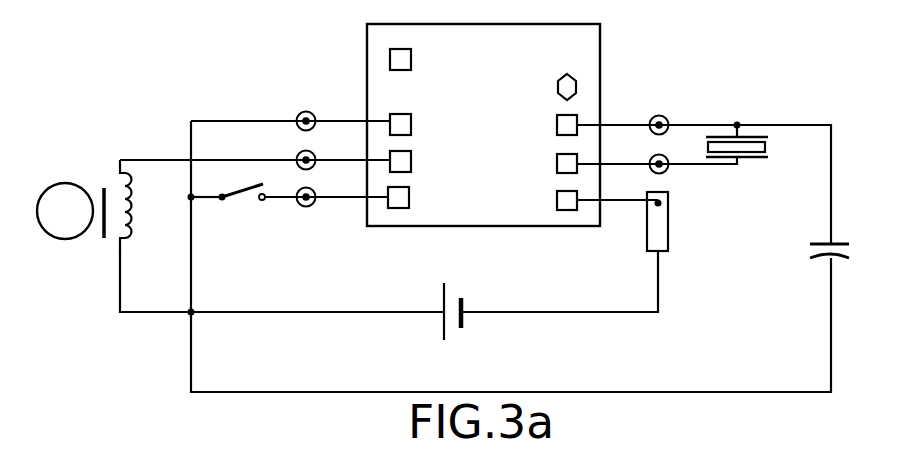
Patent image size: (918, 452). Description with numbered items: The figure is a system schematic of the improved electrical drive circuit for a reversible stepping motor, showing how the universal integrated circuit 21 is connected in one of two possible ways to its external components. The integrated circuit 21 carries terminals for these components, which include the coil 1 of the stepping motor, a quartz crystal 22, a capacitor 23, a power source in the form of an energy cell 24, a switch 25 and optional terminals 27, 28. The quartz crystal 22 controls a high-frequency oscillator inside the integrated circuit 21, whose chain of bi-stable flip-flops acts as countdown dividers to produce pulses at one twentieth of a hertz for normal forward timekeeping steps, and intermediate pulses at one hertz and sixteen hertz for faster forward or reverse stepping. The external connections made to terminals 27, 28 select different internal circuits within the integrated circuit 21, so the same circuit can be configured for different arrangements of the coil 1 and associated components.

The coil 1 is at (131, 226).
The integrated circuit 21 is at (503, 143).
The quartz crystal 22 is at (768, 150).
The capacitor 23 is at (850, 255).
The energy cell 24 is at (452, 330).
The switch 25 is at (245, 200).
The terminal 27 is at (390, 60).
The terminal 28 is at (398, 208).